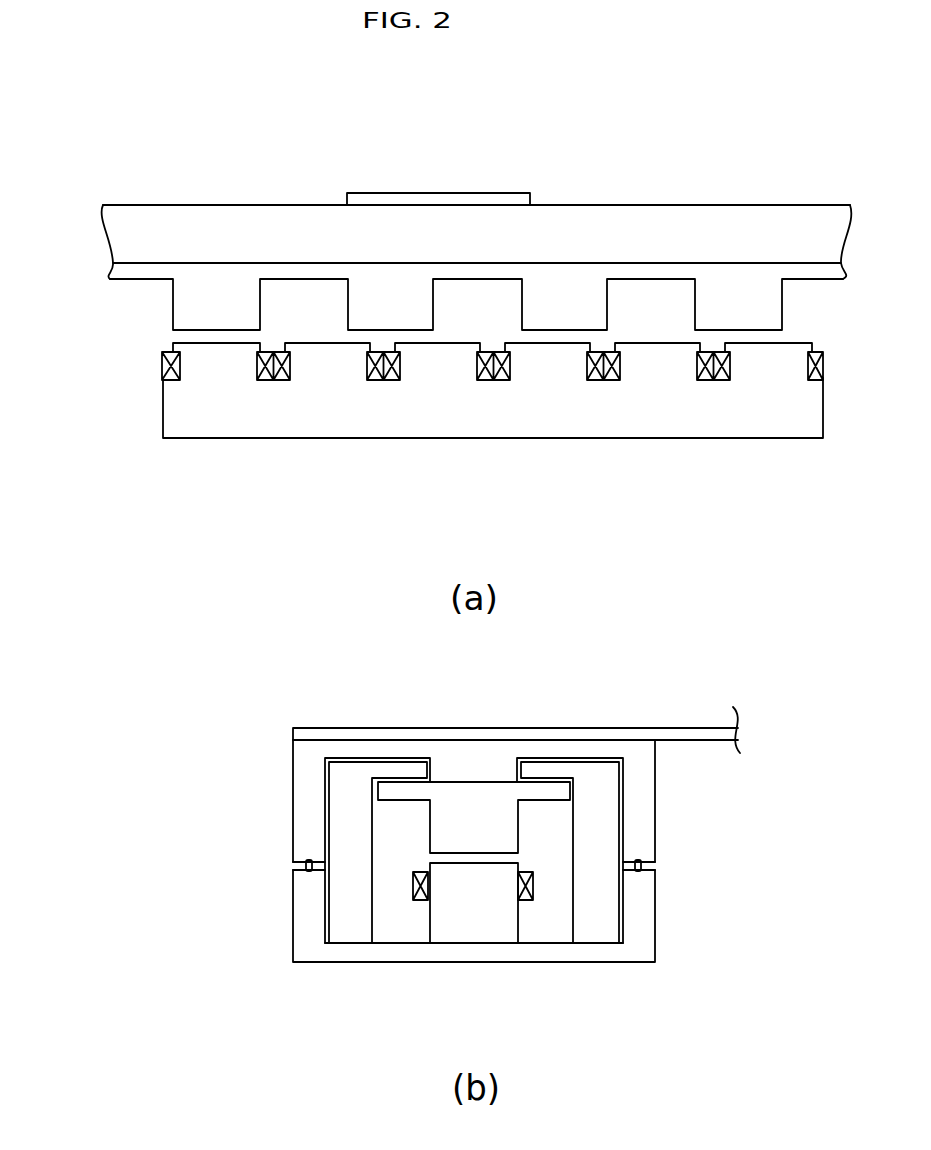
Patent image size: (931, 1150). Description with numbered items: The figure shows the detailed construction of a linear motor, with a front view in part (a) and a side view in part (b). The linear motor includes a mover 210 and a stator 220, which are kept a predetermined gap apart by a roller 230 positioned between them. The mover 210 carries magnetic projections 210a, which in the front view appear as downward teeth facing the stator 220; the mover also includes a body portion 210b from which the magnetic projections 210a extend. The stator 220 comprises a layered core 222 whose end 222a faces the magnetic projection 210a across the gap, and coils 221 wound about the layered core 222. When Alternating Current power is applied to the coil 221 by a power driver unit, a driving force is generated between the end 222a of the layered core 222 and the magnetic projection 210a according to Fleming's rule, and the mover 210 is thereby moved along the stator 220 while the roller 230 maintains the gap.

The mover 210 is at (661, 193).
The magnetic projection 210a is at (188, 313).
The rotor yoke / housing plate 210b is at (209, 222).
The stator 220 is at (668, 452).
The coil 221 is at (163, 363).
The layered core 222 is at (307, 412).
The end of layered core 222a is at (451, 343).
The roller 230 is at (304, 865).